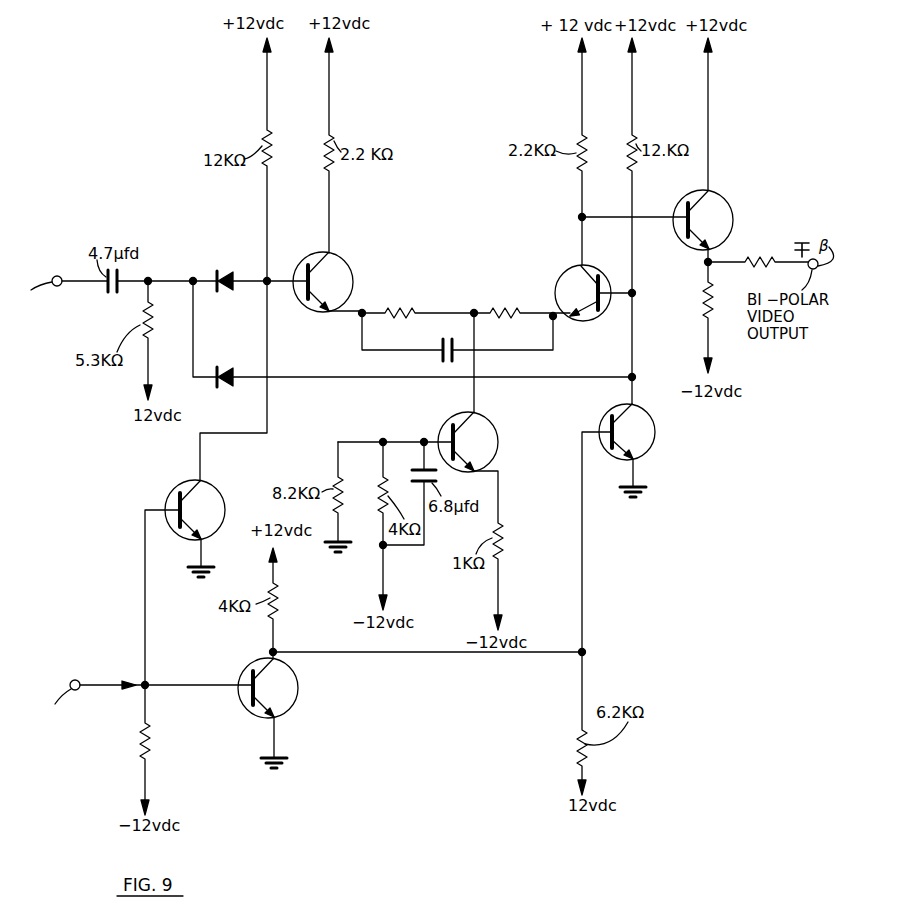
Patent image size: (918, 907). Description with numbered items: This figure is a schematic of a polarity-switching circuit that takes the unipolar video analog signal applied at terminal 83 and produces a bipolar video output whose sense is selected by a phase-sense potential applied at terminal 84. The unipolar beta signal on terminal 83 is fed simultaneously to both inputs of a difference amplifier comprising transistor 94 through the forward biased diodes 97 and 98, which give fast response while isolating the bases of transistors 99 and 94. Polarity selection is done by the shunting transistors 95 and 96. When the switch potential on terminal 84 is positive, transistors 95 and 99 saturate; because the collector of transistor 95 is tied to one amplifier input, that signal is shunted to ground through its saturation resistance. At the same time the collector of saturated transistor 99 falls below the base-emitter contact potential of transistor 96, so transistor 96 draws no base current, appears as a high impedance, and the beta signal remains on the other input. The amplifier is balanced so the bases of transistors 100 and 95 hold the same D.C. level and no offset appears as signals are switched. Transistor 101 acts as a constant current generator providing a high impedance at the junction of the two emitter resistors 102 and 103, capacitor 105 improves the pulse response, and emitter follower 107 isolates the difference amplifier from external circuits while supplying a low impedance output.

The terminal 83 is at (58, 276).
The terminal 84 is at (75, 680).
The transistor 94 is at (596, 322).
The shunting transistor 95 is at (205, 495).
The shunting transistor 96 is at (635, 428).
The diode 97 is at (231, 274).
The diode 98 is at (236, 368).
The transistor 99 is at (286, 672).
The transistor 100 is at (318, 309).
The transistor 101 is at (481, 436).
The emitter resistor 102 is at (392, 306).
The emitter resistor 103 is at (516, 308).
The capacitor 105 is at (441, 360).
The emitter follower 107 is at (712, 214).